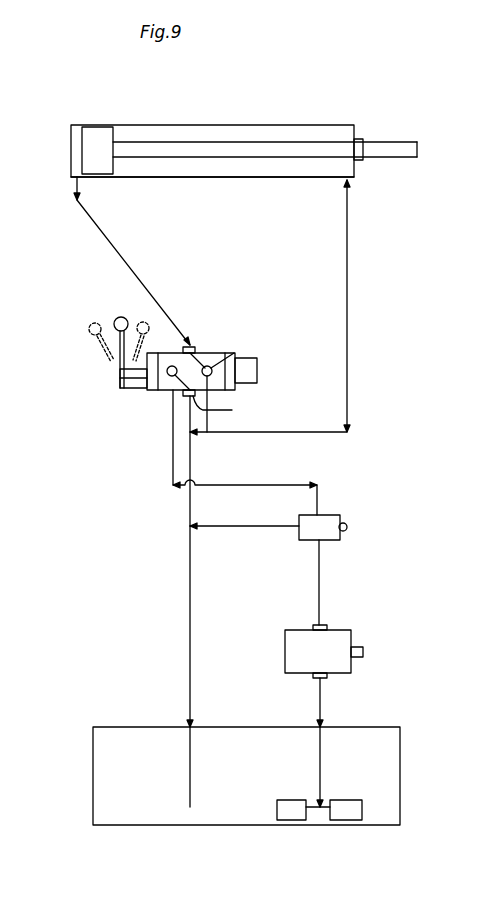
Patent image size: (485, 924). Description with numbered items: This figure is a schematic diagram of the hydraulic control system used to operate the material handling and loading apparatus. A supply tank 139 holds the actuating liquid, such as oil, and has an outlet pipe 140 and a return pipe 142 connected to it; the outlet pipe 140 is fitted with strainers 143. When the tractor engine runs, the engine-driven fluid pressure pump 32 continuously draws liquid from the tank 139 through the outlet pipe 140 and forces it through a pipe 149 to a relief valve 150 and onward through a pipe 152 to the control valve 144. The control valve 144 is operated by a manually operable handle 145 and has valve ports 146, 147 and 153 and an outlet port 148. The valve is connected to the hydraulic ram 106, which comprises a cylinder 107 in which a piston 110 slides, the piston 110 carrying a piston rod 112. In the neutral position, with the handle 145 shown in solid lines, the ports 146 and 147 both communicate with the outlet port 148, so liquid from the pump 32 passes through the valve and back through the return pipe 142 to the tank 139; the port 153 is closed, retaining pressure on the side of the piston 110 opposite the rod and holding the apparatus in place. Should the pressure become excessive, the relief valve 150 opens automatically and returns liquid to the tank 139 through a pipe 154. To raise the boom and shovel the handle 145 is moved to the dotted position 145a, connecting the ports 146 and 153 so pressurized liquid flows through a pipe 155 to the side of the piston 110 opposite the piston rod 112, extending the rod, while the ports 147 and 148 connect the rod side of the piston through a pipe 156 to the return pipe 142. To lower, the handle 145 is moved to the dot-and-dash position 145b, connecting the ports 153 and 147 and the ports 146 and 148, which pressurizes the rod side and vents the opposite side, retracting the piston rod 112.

The hydraulic ram 106 is at (252, 121).
The cylinder 107 is at (274, 178).
The piston 110 is at (92, 146).
The piston rod 112 is at (389, 156).
The pipe 155 is at (126, 253).
The manually operable handle 145 is at (118, 318).
The handle position for raising 145a is at (89, 332).
The handle position for lowering 145b is at (144, 322).
The valve port 153 is at (198, 352).
The valve port 146 is at (172, 366).
The control valve 144 is at (213, 352).
The valve port 147 is at (238, 358).
The outlet port 148 is at (225, 405).
The pipe 156 is at (348, 326).
The pipe 152 is at (215, 485).
The pipe 154 is at (248, 528).
The relief valve 150 is at (345, 520).
The pipe 149 is at (321, 576).
The fluid pressure pump 32 is at (353, 632).
The outlet pipe 140 is at (322, 712).
The return pipe 142 is at (188, 706).
The supply tank 139 is at (401, 752).
The strainers 143 is at (340, 820).